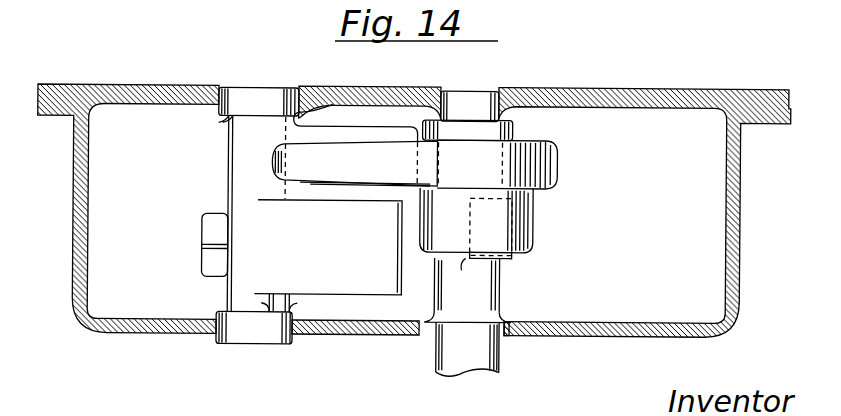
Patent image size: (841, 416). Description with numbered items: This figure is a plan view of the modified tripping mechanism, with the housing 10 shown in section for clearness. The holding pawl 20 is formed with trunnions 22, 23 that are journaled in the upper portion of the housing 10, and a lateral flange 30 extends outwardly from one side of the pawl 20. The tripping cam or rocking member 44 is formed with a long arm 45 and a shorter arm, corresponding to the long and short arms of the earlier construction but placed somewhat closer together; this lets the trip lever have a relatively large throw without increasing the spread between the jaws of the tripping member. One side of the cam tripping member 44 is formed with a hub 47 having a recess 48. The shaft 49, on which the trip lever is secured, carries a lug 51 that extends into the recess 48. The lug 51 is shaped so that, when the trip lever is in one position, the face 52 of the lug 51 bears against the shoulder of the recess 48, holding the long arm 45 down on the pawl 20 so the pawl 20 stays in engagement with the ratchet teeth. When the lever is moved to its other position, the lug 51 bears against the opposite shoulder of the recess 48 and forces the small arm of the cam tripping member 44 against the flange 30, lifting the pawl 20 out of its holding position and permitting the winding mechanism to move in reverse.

The housing 10 is at (101, 336).
The pawl 20 is at (335, 292).
The trunnion 22 is at (255, 328).
The trunnion 23 is at (239, 128).
The flange 30 is at (376, 132).
The tripping cam member 44 is at (543, 137).
The long arm 45 is at (326, 157).
The hub 47 is at (533, 222).
The recess 48 is at (530, 198).
The shaft 49 is at (505, 287).
The lug 51 is at (512, 257).
The face 52 is at (465, 276).